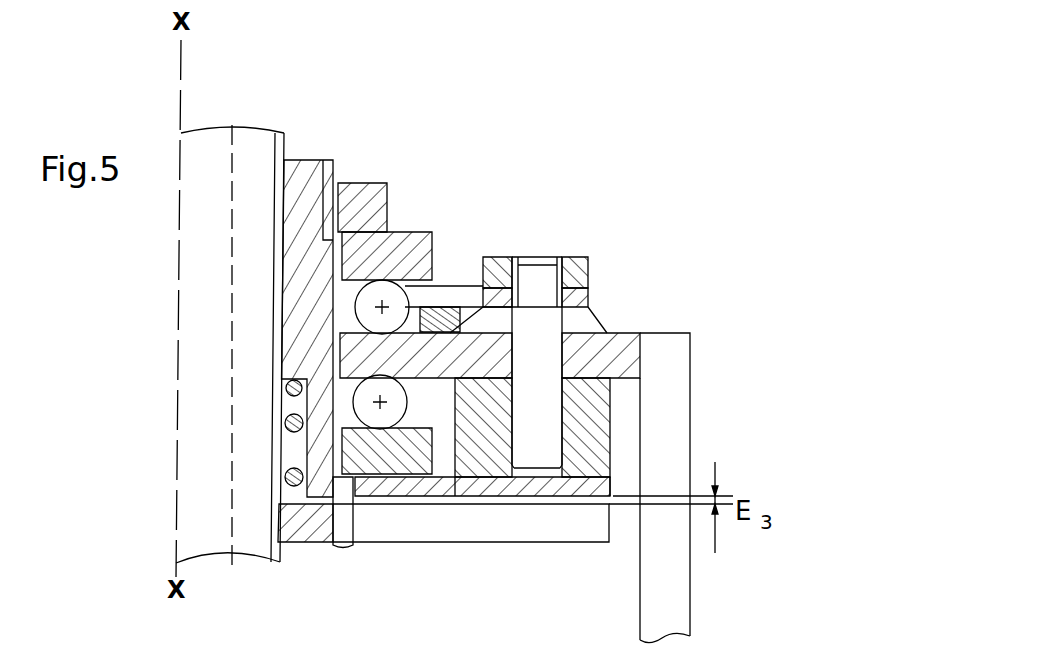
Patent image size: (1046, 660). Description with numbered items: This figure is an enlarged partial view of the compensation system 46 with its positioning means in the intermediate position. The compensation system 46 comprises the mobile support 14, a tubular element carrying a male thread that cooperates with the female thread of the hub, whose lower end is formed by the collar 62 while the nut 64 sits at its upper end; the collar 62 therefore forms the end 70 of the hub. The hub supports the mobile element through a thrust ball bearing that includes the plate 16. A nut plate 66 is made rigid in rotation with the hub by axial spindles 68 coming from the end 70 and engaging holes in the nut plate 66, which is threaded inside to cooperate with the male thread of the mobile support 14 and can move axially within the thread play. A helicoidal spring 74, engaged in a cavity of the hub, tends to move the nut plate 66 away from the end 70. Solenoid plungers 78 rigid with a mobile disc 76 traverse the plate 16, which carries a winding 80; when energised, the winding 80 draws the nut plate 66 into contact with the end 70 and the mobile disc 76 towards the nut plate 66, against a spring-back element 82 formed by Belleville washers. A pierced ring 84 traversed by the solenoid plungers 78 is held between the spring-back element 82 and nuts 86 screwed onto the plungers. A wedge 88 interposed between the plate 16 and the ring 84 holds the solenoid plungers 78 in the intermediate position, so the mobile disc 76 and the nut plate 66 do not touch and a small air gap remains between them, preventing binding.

The mobile support 14 is at (250, 138).
The plate 16 is at (665, 326).
The compensation system 46 is at (424, 197).
The collar 62 is at (418, 484).
The nut 64 is at (372, 182).
The nut plate 66 is at (593, 554).
The axial spindles 68 is at (338, 551).
The end of the hub 70 is at (370, 500).
The spring 74 is at (276, 430).
The mobile disc 76 is at (485, 496).
The solenoid plungers 78 is at (547, 414).
The winding 80 is at (620, 440).
The spring-back element 82 is at (593, 320).
The ring 84 is at (466, 290).
The nuts 86 is at (572, 262).
The wedge 88 is at (447, 302).